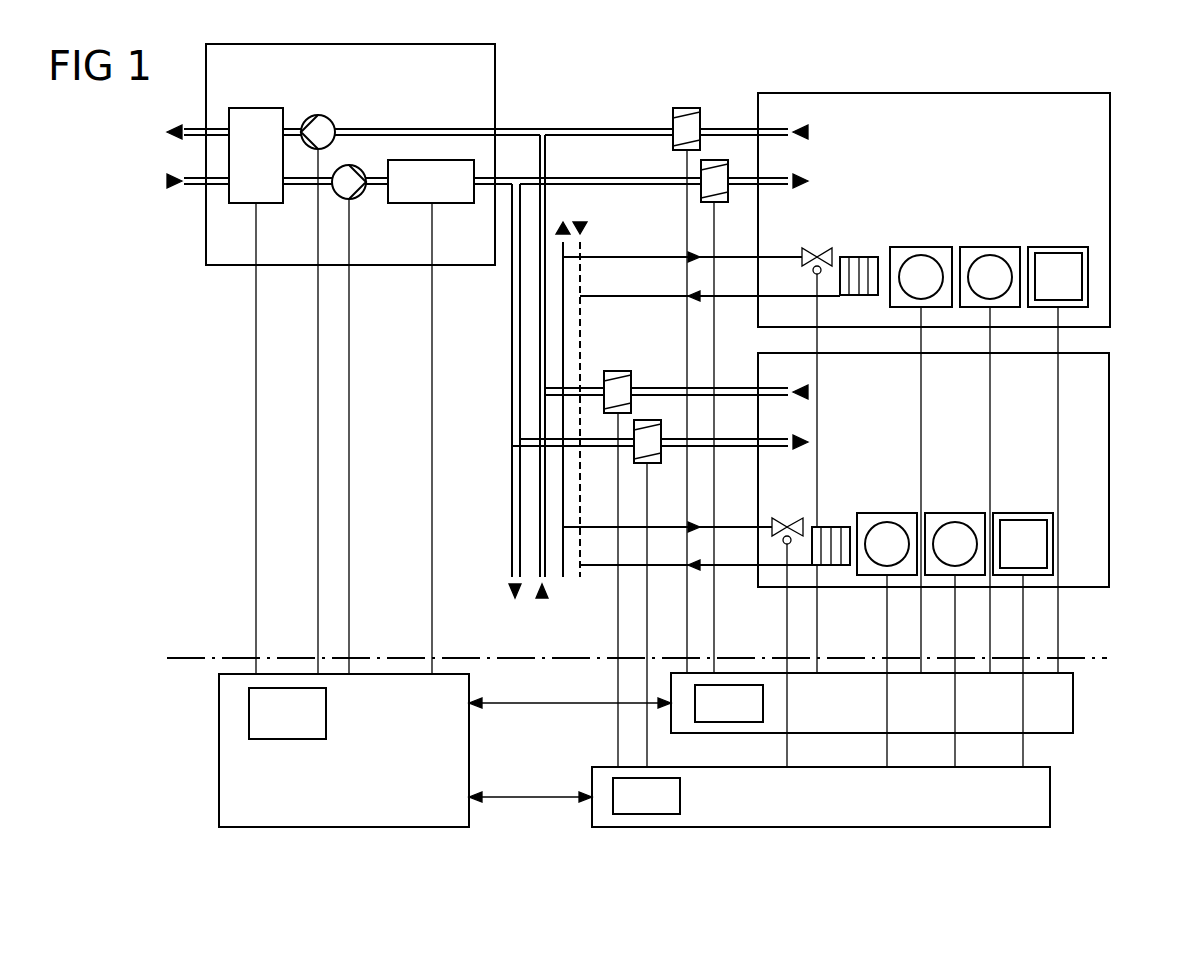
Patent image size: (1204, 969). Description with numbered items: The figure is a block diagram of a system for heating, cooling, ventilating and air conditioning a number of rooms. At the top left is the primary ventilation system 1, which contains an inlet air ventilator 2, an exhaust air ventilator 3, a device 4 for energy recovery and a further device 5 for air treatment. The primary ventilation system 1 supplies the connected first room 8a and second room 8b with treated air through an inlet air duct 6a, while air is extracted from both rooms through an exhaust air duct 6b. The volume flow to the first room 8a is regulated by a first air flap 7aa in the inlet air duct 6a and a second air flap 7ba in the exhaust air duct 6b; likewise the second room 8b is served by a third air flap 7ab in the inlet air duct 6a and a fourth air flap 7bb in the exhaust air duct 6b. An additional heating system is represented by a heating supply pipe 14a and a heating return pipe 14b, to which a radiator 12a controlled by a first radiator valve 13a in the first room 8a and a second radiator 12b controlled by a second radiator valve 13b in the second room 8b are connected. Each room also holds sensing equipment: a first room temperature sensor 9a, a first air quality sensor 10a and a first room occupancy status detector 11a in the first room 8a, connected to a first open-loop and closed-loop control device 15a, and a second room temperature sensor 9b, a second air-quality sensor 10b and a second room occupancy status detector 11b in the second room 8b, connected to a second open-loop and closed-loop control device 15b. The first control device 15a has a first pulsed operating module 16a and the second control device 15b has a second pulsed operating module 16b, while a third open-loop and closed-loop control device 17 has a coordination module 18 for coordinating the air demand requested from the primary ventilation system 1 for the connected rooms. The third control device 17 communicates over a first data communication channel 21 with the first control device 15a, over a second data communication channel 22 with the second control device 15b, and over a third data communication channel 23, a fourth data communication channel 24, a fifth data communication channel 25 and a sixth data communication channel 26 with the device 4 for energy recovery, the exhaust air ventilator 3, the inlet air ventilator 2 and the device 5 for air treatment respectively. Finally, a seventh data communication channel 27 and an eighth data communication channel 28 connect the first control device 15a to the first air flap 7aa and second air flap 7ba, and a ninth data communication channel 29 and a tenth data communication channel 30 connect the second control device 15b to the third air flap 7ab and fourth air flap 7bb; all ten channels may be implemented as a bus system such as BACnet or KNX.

The primary ventilation system 1 is at (206, 90).
The inlet air ventilator 2 is at (360, 196).
The exhaust air ventilator 3 is at (326, 120).
The device for energy recovery 4 is at (256, 108).
The device for air treatment 5 is at (449, 203).
The inlet air duct 6a is at (613, 186).
The exhaust air duct 6b is at (585, 128).
The first air flap 7aa is at (701, 172).
The third air flap 7ab is at (648, 420).
The second air flap 7ba is at (686, 108).
The fourth air flap 7bb is at (618, 371).
The first room 8a is at (1110, 212).
The second room 8b is at (1109, 470).
The first room temperature sensor 9a is at (921, 247).
The second room temperature sensor 9b is at (887, 513).
The first air quality sensor 10a is at (990, 247).
The second air-quality sensor 10b is at (955, 513).
The first room occupancy status detector 11a is at (1058, 247).
The second room occupancy status detector 11b is at (1023, 513).
The radiator 12a is at (857, 257).
The second radiator 12b is at (836, 527).
The first radiator valve 13a is at (817, 249).
The second radiator valve 13b is at (795, 519).
The heating supply pipe 14a is at (563, 313).
The heating return pipe 14b is at (581, 282).
The first open-loop and closed-loop control device 15a is at (1073, 700).
The second open-loop and closed-loop control device 15b is at (1050, 795).
The first pulsed operating module 16a is at (763, 703).
The second pulsed operating module 16b is at (680, 793).
The third open-loop and closed-loop control device 17 is at (219, 750).
The coordination module 18 is at (326, 714).
The first data communication channel 21 is at (523, 705).
The second data communication channel 22 is at (545, 797).
The third data communication channel 23 is at (256, 408).
The fourth data communication channel 24 is at (318, 508).
The fifth data communication channel 25 is at (349, 408).
The sixth data communication channel 26 is at (432, 508).
The seventh data communication channel 27 is at (715, 597).
The eighth data communication channel 28 is at (687, 630).
The ninth data communication channel 29 is at (647, 630).
The tenth data communication channel 30 is at (618, 598).